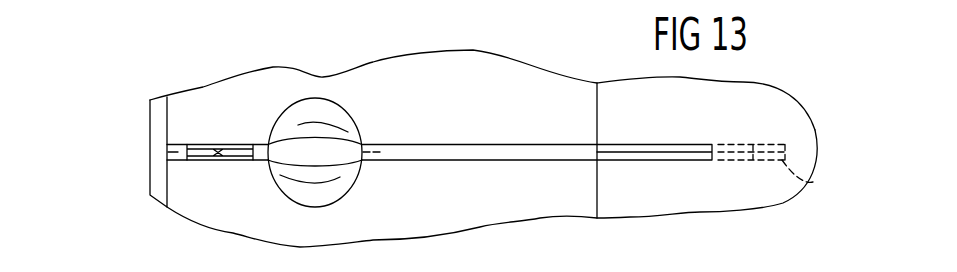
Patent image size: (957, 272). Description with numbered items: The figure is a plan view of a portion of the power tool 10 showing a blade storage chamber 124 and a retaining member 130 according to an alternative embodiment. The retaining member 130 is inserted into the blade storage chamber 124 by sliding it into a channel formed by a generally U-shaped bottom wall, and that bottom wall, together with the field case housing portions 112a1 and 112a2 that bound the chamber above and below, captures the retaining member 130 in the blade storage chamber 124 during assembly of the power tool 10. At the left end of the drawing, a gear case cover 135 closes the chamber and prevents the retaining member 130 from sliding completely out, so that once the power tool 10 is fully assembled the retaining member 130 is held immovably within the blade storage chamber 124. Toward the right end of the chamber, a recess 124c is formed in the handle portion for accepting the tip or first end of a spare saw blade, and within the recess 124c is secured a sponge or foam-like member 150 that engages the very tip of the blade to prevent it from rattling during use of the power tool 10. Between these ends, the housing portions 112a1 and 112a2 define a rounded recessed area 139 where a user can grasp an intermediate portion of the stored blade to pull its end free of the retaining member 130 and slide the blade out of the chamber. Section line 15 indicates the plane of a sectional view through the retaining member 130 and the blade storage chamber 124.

The power tool 10 is at (148, 72).
The section line 15 is at (155, 152).
The field case housing portion 112a1 is at (530, 92).
The field case housing portion 112a2 is at (530, 205).
The blade storage chamber 124 is at (413, 146).
The recess 124c is at (733, 142).
The retaining member 130 is at (227, 141).
The gear case cover 135 is at (160, 115).
The recessed area 139 is at (329, 115).
The foam-like member 150 is at (815, 182).